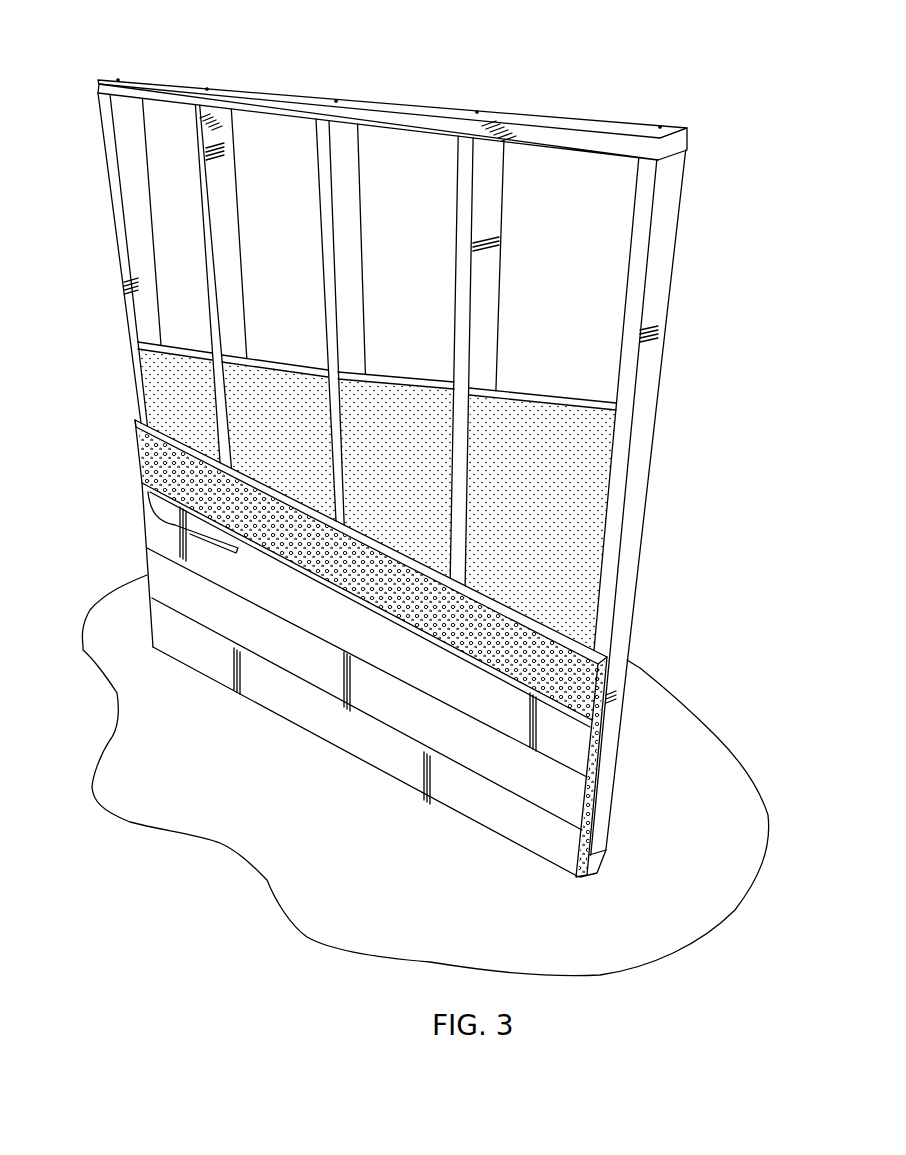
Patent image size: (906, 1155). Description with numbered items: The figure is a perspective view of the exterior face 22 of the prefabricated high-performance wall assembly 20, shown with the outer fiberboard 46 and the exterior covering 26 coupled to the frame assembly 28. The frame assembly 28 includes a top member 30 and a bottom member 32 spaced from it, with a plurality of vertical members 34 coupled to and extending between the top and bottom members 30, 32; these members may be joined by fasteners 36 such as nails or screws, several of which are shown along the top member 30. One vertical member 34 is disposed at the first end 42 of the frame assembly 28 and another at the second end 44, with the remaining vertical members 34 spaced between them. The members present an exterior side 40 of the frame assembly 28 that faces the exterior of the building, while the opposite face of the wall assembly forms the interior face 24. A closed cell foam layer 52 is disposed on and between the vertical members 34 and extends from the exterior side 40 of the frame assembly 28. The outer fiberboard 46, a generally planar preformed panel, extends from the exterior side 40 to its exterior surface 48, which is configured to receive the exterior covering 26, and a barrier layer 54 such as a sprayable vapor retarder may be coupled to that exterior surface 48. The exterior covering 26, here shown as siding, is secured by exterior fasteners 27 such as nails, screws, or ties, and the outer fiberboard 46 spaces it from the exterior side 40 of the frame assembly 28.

The high-performance wall assembly 20 is at (703, 142).
The exterior face 22 is at (115, 550).
The interior face 24 is at (660, 474).
The exterior covering 26 is at (568, 837).
The exterior fasteners 27 is at (200, 500).
The frame assembly 28 is at (700, 235).
The top member 30 is at (540, 122).
The bottom member 32 is at (603, 857).
The vertical members 34 is at (147, 215).
The fasteners 36 is at (118, 78).
The exterior side 40 is at (118, 288).
The first end 42 is at (93, 193).
The second end 44 is at (678, 292).
The outer fiberboard 46 is at (610, 672).
The exterior surface 48 is at (392, 580).
The closed cell foam layer 52 is at (180, 360).
The barrier layer 54 is at (150, 470).